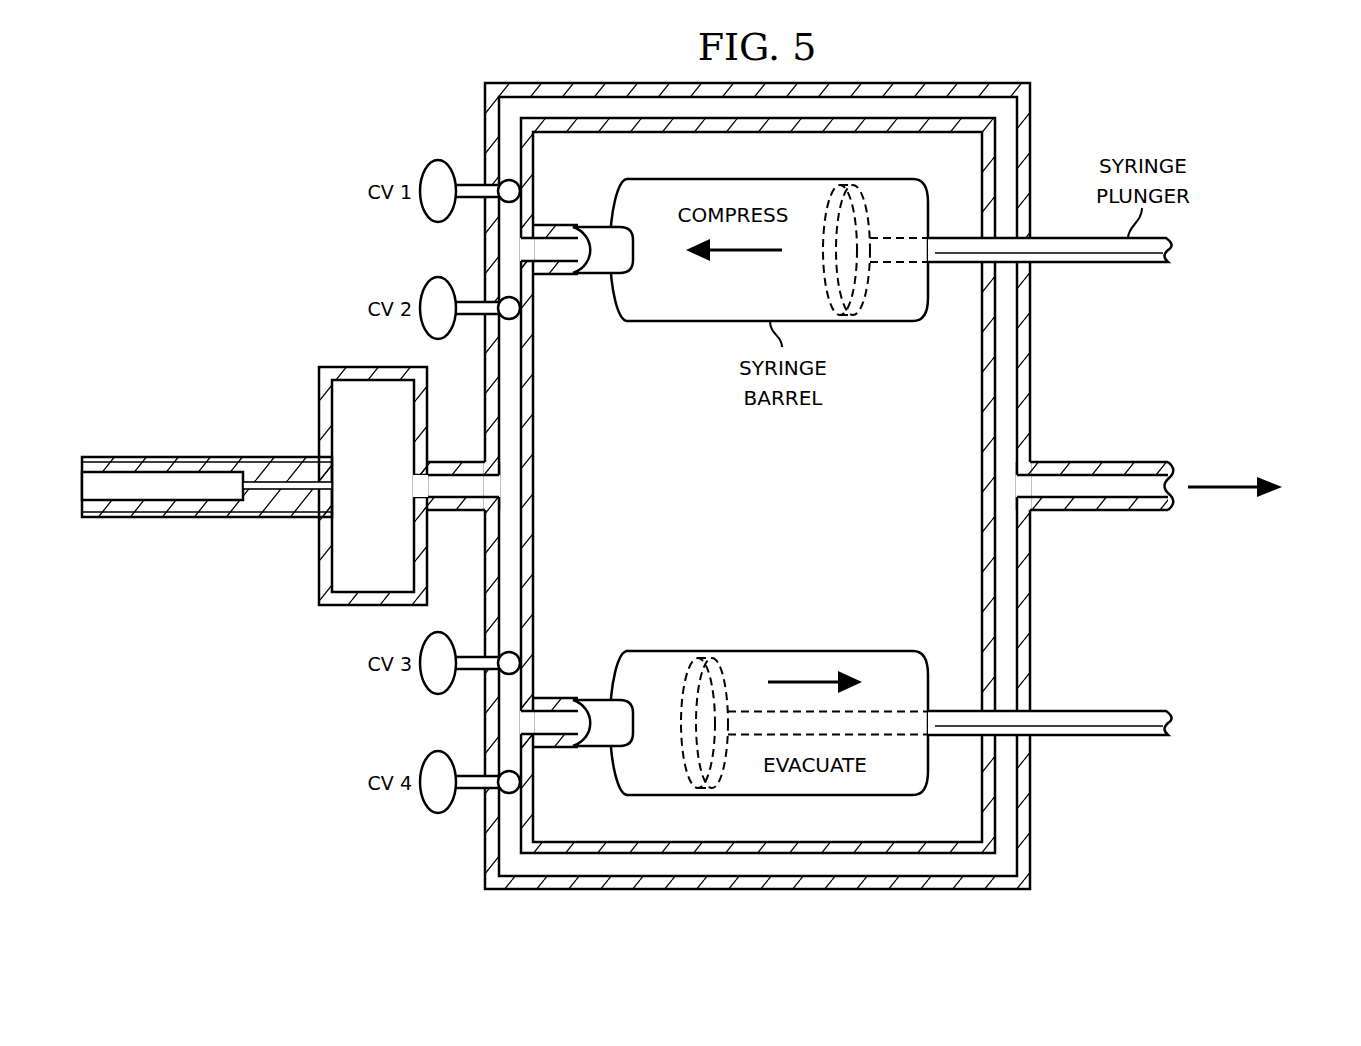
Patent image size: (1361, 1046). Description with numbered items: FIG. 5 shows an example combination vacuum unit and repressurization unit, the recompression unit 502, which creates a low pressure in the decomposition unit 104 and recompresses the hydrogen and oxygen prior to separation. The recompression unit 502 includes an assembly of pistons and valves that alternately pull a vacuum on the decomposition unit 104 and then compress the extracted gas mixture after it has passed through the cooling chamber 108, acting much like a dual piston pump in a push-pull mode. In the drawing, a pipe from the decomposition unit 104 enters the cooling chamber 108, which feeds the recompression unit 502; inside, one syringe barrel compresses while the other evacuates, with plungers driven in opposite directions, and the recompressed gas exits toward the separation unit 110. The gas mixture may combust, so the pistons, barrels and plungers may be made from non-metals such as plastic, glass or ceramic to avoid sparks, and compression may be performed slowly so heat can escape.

The decomposition unit 104 is at (146, 452).
The cooling chamber 108 is at (400, 503).
The recompression unit 502 is at (780, 503).
The separation unit 110 is at (1230, 437).